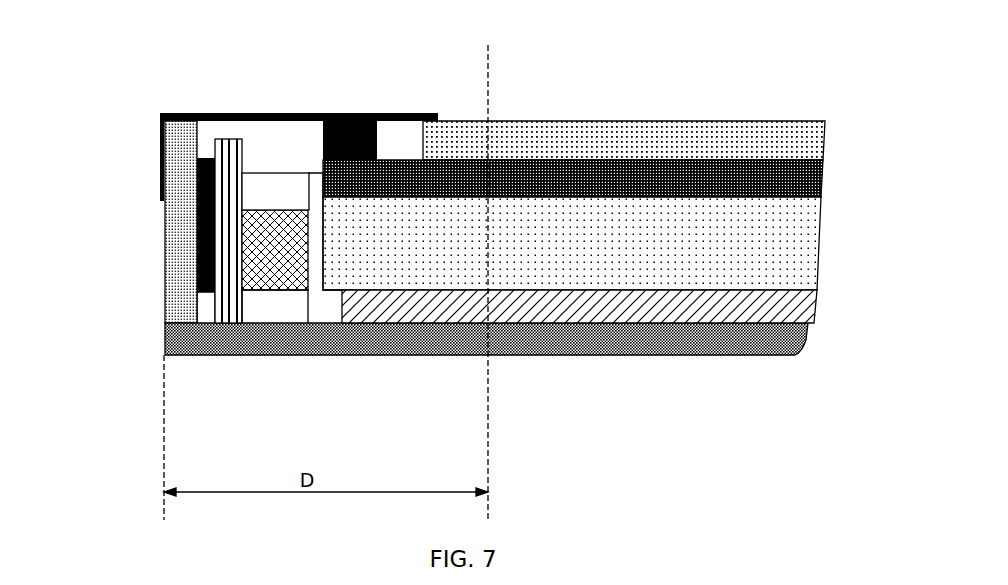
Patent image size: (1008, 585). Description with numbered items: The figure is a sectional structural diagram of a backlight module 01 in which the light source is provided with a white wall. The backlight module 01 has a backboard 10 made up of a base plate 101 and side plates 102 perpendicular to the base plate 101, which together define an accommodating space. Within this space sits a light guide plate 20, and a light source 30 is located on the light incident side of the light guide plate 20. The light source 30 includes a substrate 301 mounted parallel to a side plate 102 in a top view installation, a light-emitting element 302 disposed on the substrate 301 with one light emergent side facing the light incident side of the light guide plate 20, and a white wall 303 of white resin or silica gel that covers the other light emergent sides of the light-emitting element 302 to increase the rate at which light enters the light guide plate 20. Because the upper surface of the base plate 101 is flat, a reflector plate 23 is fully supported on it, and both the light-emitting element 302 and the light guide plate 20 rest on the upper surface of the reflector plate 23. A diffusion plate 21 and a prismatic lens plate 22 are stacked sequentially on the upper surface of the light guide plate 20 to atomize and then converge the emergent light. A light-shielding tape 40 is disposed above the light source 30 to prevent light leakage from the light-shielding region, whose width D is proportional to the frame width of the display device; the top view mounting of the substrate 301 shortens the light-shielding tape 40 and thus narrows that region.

The backlight module 01 is at (167, 22).
The backboard 10 is at (79, 237).
The base plate 101 is at (180, 340).
The side plate 102 is at (178, 251).
The light guide plate 20 is at (797, 251).
The diffusion plate 21 is at (800, 177).
The prismatic lens plate 22 is at (805, 137).
The reflector plate 23 is at (800, 305).
The light source 30 is at (262, 269).
The substrate 301 is at (232, 290).
The light-emitting element 302 is at (267, 278).
The white wall 303 is at (263, 193).
The light-shielding tape 40 is at (410, 113).